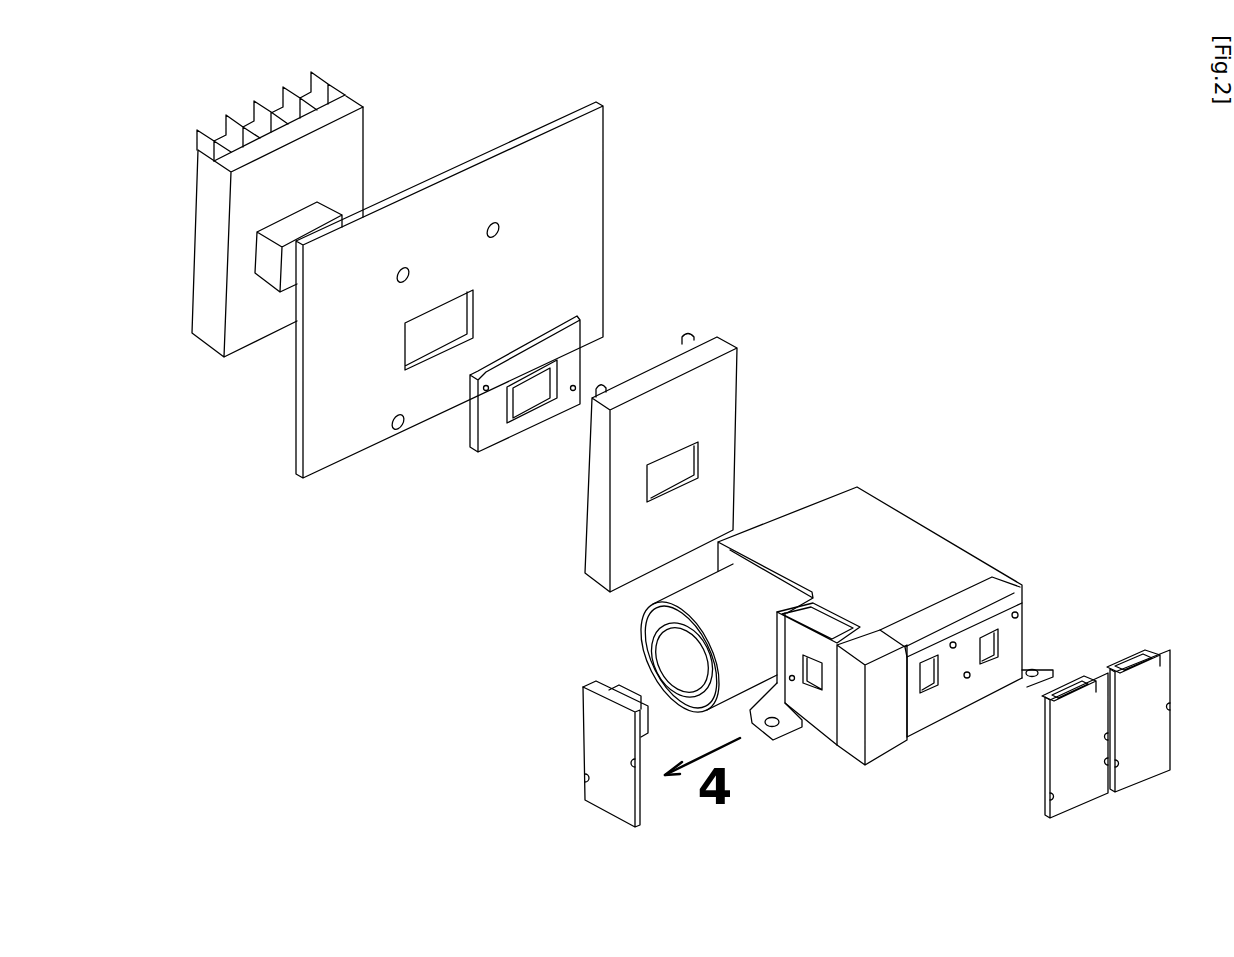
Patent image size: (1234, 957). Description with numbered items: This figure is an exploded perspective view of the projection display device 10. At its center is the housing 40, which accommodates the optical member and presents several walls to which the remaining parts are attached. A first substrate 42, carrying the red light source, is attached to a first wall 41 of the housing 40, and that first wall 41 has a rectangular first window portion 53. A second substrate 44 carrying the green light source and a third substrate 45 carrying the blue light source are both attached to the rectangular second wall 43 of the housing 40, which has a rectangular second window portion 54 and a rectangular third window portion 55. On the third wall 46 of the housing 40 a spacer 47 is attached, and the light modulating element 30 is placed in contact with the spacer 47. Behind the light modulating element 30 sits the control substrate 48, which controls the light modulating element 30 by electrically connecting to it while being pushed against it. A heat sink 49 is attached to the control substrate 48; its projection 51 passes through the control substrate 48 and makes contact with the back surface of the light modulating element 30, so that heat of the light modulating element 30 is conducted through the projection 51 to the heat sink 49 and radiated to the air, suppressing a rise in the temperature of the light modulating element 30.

The projection display device 10 is at (973, 273).
The light modulating element 30 is at (533, 398).
The housing 40 is at (899, 632).
The first wall 41 is at (823, 713).
The first substrate 42 is at (612, 800).
The second wall 43 is at (920, 715).
The second substrate 44 is at (1085, 793).
The third substrate 45 is at (1150, 765).
The third wall 46 is at (798, 512).
The spacer 47 is at (585, 575).
The control substrate 48 is at (312, 430).
The heat sink 49 is at (207, 250).
The projection 51 is at (322, 213).
The first window portion 53 is at (812, 677).
The second window portion 54 is at (933, 675).
The third window portion 55 is at (990, 645).